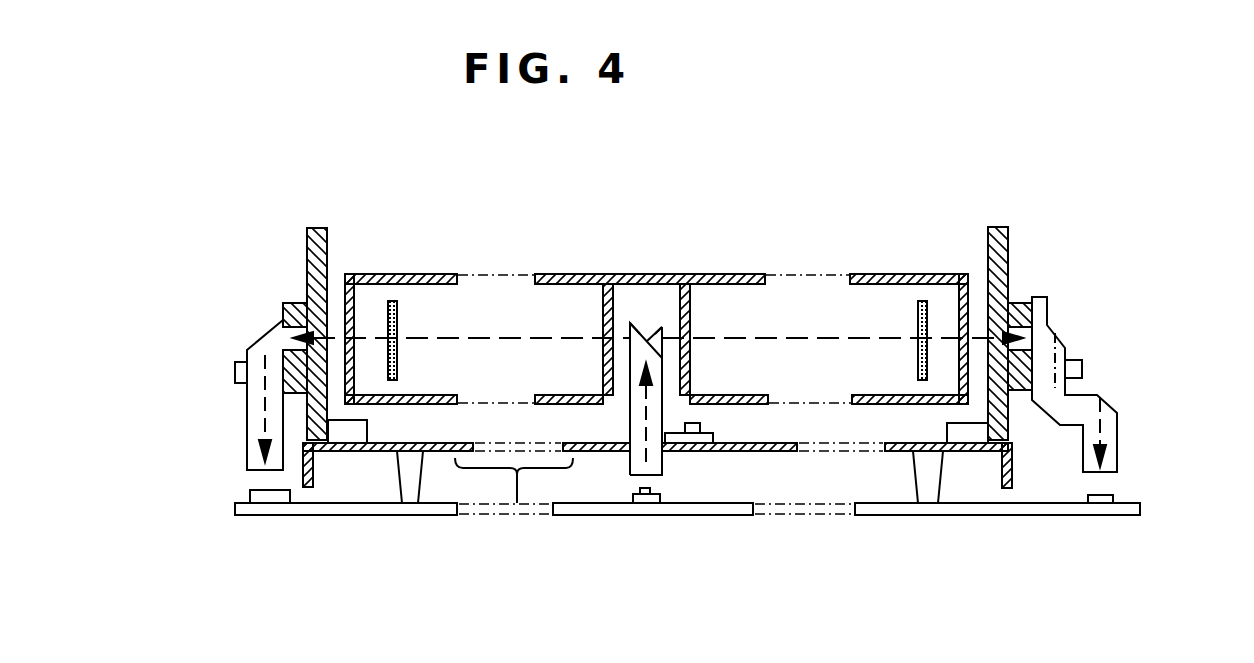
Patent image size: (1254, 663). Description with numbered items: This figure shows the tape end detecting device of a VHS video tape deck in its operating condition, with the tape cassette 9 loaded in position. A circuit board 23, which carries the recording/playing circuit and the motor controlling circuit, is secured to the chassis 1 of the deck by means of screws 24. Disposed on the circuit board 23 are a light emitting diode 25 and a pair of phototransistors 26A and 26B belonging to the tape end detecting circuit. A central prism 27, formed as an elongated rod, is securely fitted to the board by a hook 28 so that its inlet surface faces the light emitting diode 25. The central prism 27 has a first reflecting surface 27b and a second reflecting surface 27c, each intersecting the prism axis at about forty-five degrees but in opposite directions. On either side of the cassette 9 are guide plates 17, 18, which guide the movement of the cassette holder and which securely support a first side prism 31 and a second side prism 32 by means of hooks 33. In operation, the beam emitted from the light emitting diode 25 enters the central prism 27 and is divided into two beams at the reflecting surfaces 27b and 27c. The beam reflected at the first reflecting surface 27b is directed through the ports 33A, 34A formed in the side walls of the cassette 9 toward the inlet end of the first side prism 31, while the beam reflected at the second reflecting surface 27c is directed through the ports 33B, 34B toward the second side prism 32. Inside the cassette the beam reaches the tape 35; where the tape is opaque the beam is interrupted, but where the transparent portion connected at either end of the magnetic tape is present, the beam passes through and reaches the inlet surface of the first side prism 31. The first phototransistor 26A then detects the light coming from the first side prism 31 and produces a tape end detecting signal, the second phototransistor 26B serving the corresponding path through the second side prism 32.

The chassis 1 is at (1012, 468).
The cassette 9 is at (550, 262).
The guide plate 17 is at (307, 256).
The guide plate 18 is at (1010, 243).
The circuit board 23 is at (567, 525).
The screws 24 is at (411, 517).
The light emitting diode 25 is at (657, 487).
The phototransistor 26A is at (278, 490).
The phototransistor 26B is at (1103, 497).
The central prism 27 is at (637, 462).
The first reflecting surface 27b is at (640, 323).
The second reflecting surface 27c is at (662, 327).
The hook 28 is at (702, 432).
The first side prism 31 is at (255, 405).
The second side prism 32 is at (1057, 342).
The hooks 33 is at (235, 372).
The port 33A is at (603, 330).
The port 33B is at (690, 330).
The port 34A is at (345, 328).
The port 34B is at (969, 328).
The tape 35 is at (397, 358).